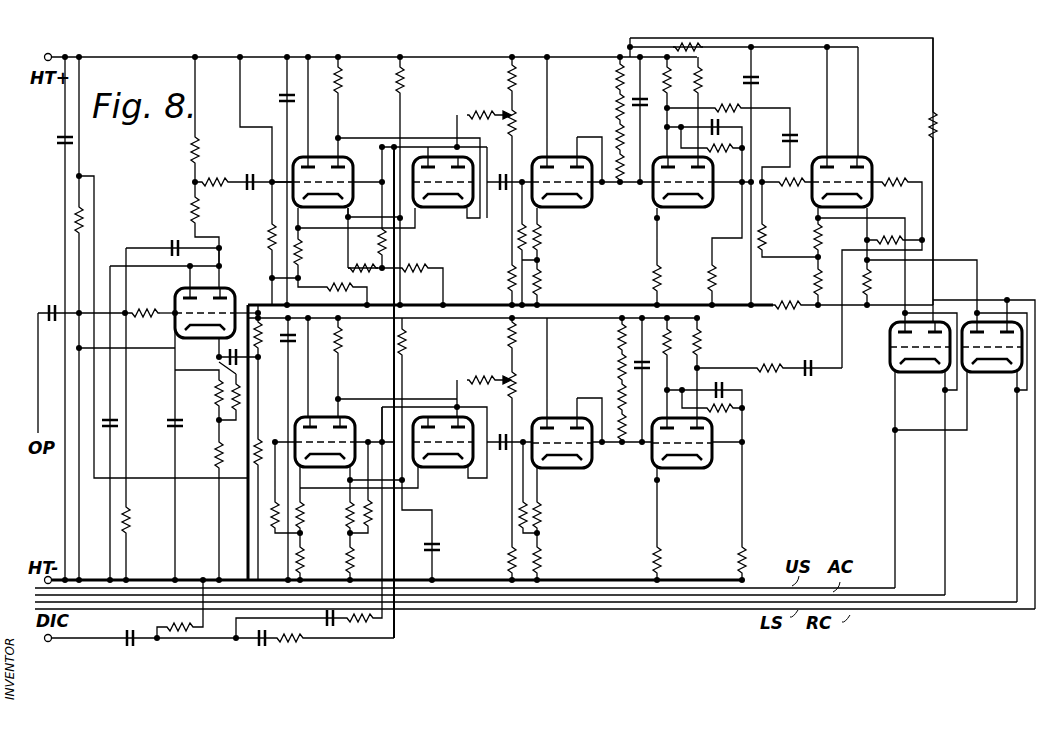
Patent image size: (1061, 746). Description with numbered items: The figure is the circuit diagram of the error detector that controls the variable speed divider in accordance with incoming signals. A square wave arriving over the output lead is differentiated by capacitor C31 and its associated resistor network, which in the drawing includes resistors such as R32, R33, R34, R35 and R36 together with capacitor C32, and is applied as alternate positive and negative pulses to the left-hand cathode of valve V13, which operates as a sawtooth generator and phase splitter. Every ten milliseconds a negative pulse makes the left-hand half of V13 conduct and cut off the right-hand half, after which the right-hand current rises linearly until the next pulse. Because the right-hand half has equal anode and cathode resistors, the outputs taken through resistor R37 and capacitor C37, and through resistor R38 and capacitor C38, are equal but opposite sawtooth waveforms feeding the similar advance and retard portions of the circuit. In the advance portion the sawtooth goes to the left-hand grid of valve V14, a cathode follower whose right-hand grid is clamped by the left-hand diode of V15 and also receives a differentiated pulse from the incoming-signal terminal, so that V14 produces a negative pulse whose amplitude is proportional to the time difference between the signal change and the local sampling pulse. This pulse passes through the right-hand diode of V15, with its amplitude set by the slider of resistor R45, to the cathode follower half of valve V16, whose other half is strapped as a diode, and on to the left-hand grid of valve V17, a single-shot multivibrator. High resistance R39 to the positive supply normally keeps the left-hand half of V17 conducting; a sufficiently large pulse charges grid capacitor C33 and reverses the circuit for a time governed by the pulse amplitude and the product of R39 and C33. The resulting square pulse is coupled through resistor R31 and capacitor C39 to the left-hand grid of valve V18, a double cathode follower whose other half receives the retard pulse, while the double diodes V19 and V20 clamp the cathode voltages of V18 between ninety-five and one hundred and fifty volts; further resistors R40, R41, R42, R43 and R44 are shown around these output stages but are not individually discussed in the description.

The capacitor C31 is at (80, 358).
The capacitor C32 is at (172, 240).
The grid capacitor C33 is at (651, 119).
The capacitor C37 is at (262, 195).
The capacitor C38 is at (288, 409).
The capacitor C39 is at (776, 127).
The resistor R31 is at (728, 153).
The resistor R32 is at (150, 300).
The resistor R33 is at (177, 126).
The resistor R34 is at (186, 224).
The resistor R35 is at (207, 391).
The resistor R36 is at (199, 494).
The resistor R37 is at (217, 171).
The resistor R38 is at (217, 353).
The high resistance R39 is at (600, 119).
The resistor R40 is at (800, 244).
The resistor R41 is at (800, 286).
The resistor R42 is at (920, 265).
The resistor R43 is at (954, 171).
The resistor R44 is at (792, 315).
The adjustable resistor R45 is at (504, 181).
The valve V13 is at (217, 303).
The valve V14 is at (329, 171).
The double diode V15 is at (450, 166).
The valve V16 is at (592, 132).
The single-shot multivibrator valve V17 is at (668, 127).
The cathode follower valve V18 is at (867, 252).
The double diode V19 is at (928, 454).
The double diode V20 is at (984, 454).